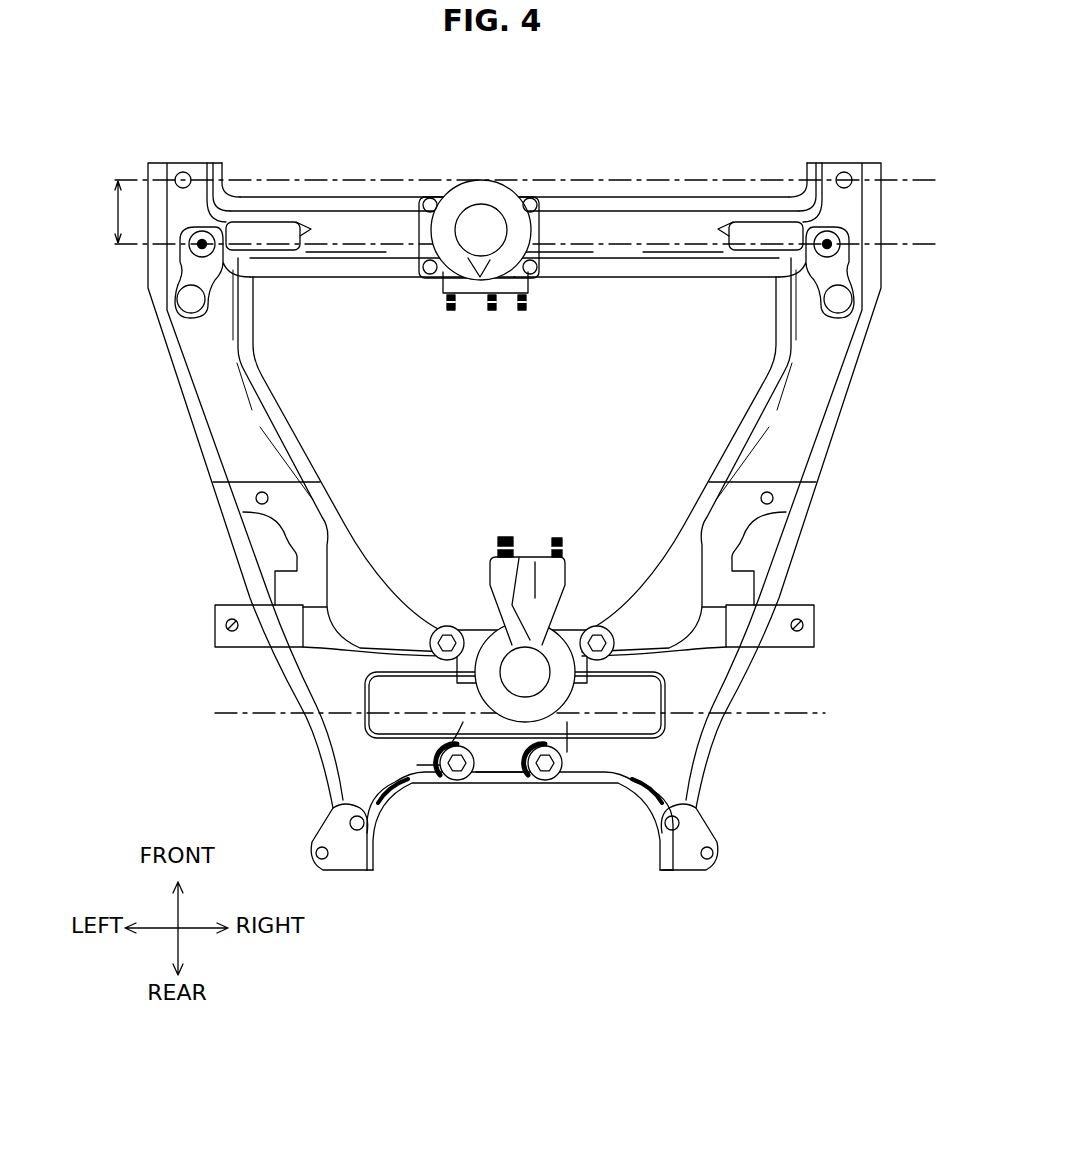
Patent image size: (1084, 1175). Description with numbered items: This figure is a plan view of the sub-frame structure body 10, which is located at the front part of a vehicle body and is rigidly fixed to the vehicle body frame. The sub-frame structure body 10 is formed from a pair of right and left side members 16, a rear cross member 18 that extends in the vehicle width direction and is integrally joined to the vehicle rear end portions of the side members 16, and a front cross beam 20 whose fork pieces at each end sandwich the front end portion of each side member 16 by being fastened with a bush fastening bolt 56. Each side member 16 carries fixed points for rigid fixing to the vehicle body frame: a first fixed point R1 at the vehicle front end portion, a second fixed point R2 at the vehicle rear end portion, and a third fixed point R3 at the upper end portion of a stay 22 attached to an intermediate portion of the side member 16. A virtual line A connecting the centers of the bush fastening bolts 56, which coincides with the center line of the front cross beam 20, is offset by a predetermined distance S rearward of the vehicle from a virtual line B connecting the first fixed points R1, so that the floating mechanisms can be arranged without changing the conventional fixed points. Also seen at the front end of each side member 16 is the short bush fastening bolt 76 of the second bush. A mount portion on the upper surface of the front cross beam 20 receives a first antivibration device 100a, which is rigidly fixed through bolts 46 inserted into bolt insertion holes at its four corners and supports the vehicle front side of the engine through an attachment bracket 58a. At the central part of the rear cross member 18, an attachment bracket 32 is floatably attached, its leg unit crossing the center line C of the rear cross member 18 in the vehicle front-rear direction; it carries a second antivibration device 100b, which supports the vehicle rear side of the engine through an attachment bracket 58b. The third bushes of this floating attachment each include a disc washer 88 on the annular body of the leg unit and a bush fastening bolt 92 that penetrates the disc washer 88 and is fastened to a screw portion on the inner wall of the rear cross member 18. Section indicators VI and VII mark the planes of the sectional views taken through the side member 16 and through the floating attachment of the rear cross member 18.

The sub-frame structure body 10 is at (731, 114).
The side member 16 is at (192, 470).
The rear cross member 18 is at (518, 801).
The front cross beam 20 is at (594, 295).
The stay 22 is at (215, 645).
The attachment bracket 32 is at (438, 732).
The bolt 46 is at (428, 198).
The bush fastening bolt 56 is at (189, 246).
The attachment bracket 58a is at (488, 312).
The attachment bracket 58b is at (545, 556).
The bush fastening bolt 76 is at (185, 303).
The disc washer 88 is at (466, 636).
The bush fastening bolt 92 is at (440, 628).
The first antivibration device 100a is at (485, 180).
The second antivibration device 100b is at (557, 690).
The first fixed point R1 is at (186, 171).
The second fixed point R2 is at (350, 822).
The third fixed point R3 is at (231, 626).
The virtual line A is at (905, 260).
The virtual line B is at (893, 180).
The center line C is at (795, 713).
The predetermined distance S is at (108, 212).
The section VI is at (170, 403).
The section VII is at (443, 605).